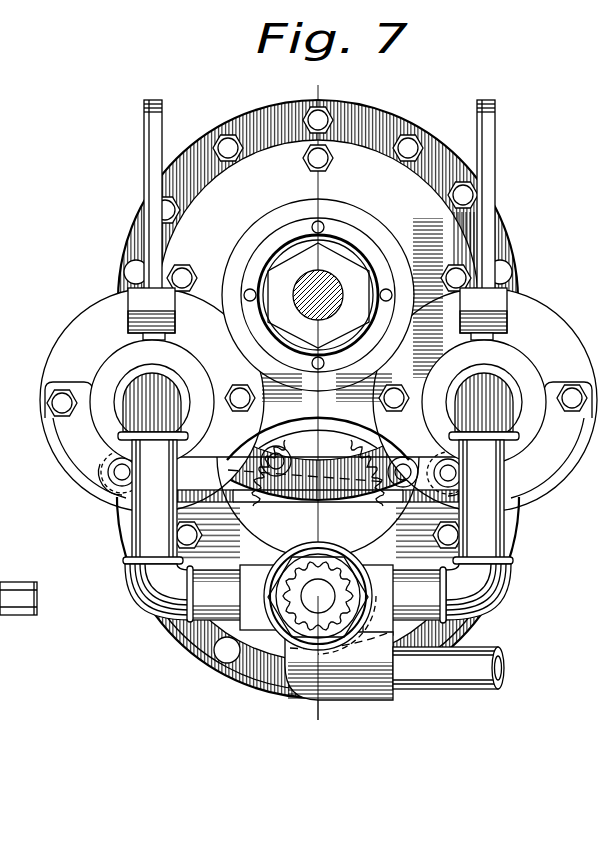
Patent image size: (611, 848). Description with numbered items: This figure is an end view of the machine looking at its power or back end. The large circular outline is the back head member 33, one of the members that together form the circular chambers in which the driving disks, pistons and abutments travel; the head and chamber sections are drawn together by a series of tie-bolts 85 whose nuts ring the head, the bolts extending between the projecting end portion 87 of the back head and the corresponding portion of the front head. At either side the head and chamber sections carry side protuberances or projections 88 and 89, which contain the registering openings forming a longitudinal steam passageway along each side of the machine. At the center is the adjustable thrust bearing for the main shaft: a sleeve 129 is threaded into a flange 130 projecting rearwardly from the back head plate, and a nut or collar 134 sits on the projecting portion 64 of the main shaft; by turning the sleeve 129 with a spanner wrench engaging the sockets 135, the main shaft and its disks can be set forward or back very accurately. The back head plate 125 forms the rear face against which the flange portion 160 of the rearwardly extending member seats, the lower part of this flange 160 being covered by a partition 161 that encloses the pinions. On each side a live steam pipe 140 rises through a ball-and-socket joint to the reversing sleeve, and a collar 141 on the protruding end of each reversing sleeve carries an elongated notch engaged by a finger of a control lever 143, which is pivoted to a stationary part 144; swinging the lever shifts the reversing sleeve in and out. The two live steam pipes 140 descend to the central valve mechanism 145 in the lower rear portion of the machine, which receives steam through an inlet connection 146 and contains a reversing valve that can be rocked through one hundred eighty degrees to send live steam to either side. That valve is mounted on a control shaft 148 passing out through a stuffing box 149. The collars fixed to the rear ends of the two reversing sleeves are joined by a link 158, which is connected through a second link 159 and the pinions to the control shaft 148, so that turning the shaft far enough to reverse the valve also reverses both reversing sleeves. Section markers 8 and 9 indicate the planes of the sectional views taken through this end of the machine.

The section line 8- 8 is at (152, 100).
The section line 9- 9 is at (336, 87).
The back head member 33 is at (360, 116).
The projecting portion of the main shaft 64 is at (299, 279).
The tie-bolts 85 is at (234, 137).
The projecting end portion of the back head 87 is at (418, 146).
The side protuberance 88 is at (78, 340).
The side protuberance 89 is at (535, 328).
The back head plate 125 is at (405, 183).
The sleeve 129 is at (280, 243).
The flange 130 is at (248, 262).
The nut 134 is at (343, 262).
The sockets 135 is at (323, 224).
The live steam pipe 140 is at (137, 430).
The collar 141 is at (95, 411).
The control lever 143 is at (144, 136).
The stationary part 144 is at (128, 304).
The central valve mechanism 145 is at (362, 694).
The inlet connection 146 is at (486, 681).
The control shaft 148 is at (18, 596).
The stuffing box 149 is at (320, 590).
The link 158 is at (193, 473).
The link 159 is at (268, 428).
The flange portion 160 is at (378, 441).
The partition 161 is at (279, 486).